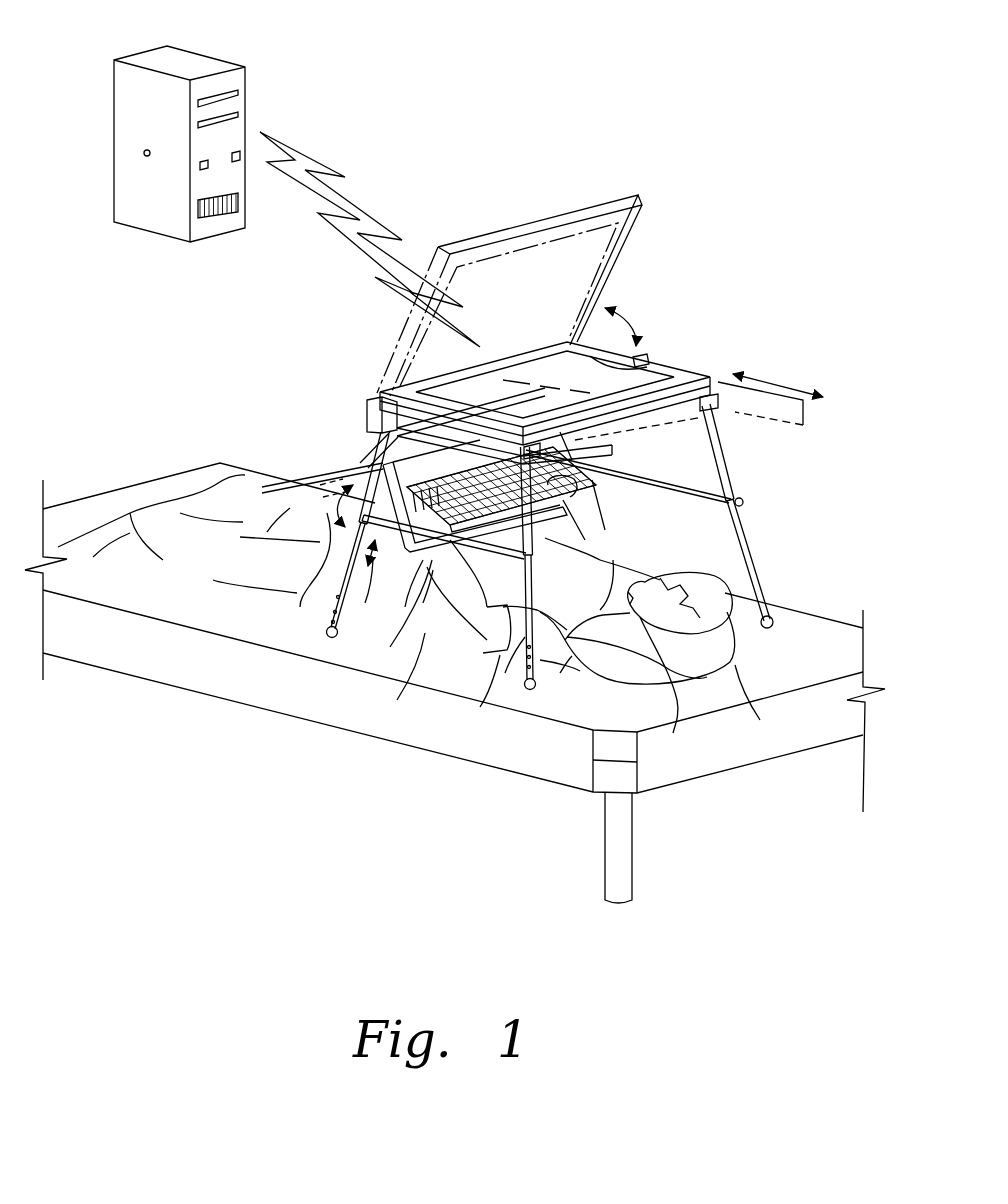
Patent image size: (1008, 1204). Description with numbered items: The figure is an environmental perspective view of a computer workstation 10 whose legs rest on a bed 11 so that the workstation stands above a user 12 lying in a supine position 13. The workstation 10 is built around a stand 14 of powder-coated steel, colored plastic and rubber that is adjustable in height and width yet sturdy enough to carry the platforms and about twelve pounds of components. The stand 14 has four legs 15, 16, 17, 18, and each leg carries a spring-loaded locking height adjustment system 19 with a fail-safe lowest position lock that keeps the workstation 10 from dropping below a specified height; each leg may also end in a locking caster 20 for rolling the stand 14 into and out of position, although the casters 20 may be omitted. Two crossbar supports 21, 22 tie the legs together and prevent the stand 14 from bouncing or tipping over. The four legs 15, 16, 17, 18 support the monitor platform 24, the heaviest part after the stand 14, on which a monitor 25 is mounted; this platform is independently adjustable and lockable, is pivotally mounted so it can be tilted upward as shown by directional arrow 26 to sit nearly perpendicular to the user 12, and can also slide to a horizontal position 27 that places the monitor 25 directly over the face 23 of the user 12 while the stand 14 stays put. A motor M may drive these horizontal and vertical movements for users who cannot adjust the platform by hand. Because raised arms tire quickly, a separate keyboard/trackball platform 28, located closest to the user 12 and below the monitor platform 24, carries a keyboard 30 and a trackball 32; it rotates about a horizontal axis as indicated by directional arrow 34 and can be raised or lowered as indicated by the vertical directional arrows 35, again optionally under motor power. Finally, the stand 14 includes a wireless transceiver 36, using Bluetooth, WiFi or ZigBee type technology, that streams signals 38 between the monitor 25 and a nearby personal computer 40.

The computer workstation 10 is at (779, 132).
The bed 11 is at (216, 680).
The user 12 is at (733, 663).
The supine position 13 is at (805, 635).
The stand 14 is at (735, 468).
The leg 15 is at (330, 615).
The leg 16 is at (755, 570).
The leg 17 is at (522, 688).
The leg 18 is at (594, 430).
The spring-loaded locking height adjustment system 19 is at (332, 640).
The locking caster 20 is at (530, 689).
The crossbar support 21 is at (440, 570).
The crossbar support 22 is at (744, 502).
The face 23 is at (675, 735).
The monitor platform 24 is at (775, 425).
The monitor 25 is at (367, 412).
The directional arrow 26 is at (632, 318).
The horizontal position 27 is at (780, 388).
The keyboard/trackball platform 28 is at (388, 436).
The keyboard 30 is at (383, 463).
The trackball 32 is at (588, 490).
The directional arrow 34 is at (340, 524).
The vertical directional arrows 35 is at (363, 591).
The wireless transceiver 36 is at (647, 367).
The signals 38 is at (356, 205).
The personal computer 40 is at (228, 62).